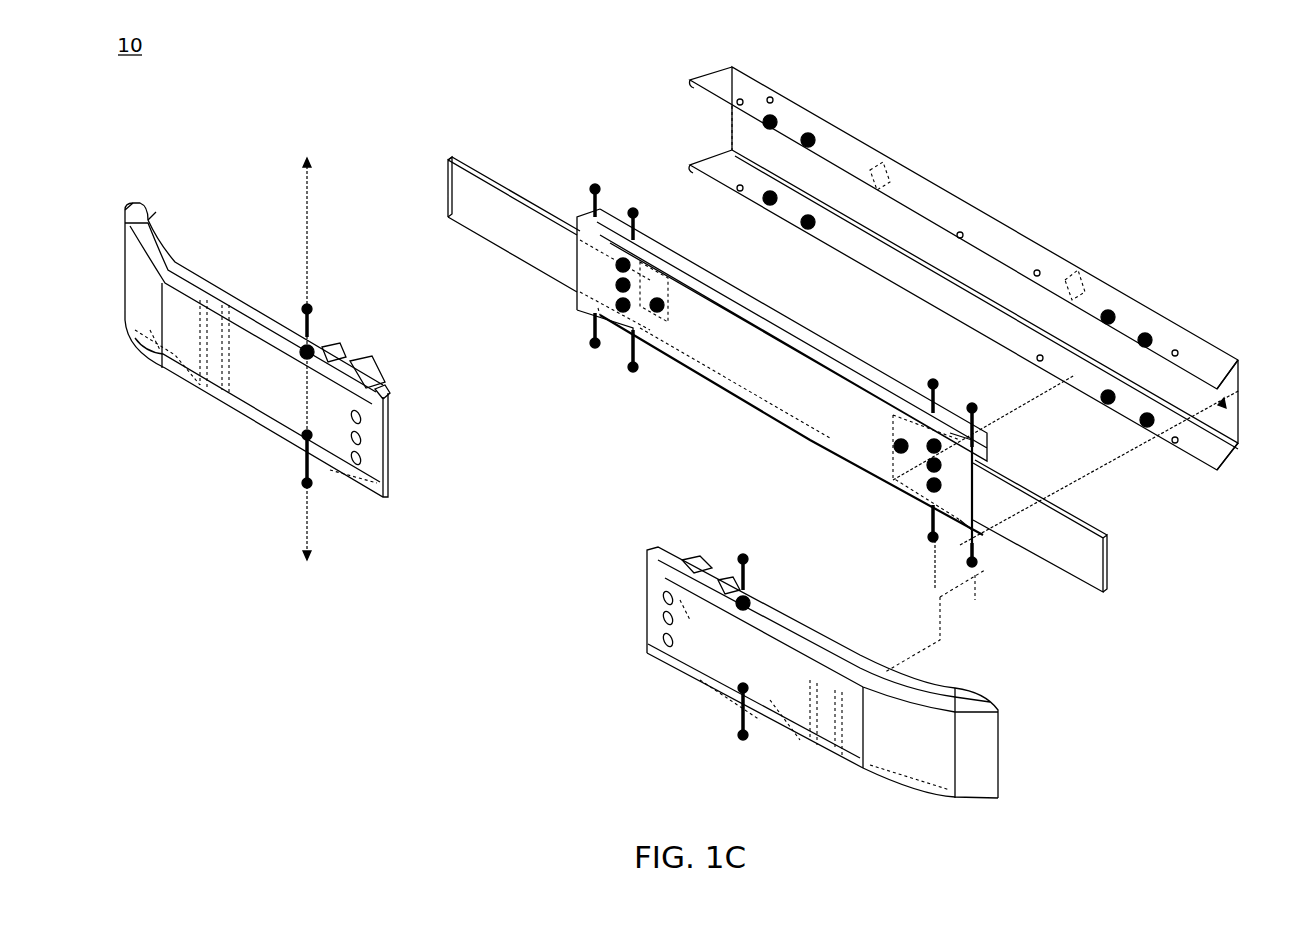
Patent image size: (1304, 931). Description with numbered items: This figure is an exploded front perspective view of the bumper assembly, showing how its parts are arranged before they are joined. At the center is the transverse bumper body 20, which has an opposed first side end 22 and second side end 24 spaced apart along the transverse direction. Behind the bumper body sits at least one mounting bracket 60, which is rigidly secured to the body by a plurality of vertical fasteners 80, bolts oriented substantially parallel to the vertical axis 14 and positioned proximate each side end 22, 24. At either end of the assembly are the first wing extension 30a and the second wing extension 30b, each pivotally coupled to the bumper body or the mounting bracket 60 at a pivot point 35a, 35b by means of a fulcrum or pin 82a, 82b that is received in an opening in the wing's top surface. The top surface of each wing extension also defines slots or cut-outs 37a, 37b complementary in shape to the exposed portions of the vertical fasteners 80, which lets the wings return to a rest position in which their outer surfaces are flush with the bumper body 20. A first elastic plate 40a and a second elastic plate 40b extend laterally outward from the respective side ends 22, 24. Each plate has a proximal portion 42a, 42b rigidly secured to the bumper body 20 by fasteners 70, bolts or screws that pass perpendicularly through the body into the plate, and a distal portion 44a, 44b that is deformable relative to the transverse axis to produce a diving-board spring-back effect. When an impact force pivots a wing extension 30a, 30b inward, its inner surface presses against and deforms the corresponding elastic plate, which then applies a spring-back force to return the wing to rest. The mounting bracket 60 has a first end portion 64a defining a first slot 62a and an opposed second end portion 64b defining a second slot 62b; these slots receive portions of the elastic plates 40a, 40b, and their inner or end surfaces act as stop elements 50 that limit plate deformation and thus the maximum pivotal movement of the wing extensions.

The vertical axis 14 is at (305, 222).
The transverse bumper body 20 is at (705, 348).
The first side end 22 is at (980, 430).
The second side end 24 is at (603, 214).
The first wing extension 30a is at (980, 752).
The second wing extension 30b is at (137, 202).
The pivot point 35a is at (752, 603).
The pivot point 35b is at (315, 351).
The slots or cut-outs 37a is at (702, 560).
The slots or cut-outs 37b is at (372, 368).
The first elastic plate 40a is at (1052, 565).
The second elastic plate 40b is at (500, 232).
The proximal portion 42a is at (980, 542).
The proximal portion 42b is at (548, 235).
The distal portion 44a is at (1108, 562).
The distal portion 44b is at (462, 165).
The stop element 50 is at (1232, 395).
The mounting bracket 60 is at (1062, 260).
The first slot 62a is at (1226, 458).
The second slot 62b is at (722, 141).
The first end portion 64a is at (1228, 345).
The second end portion 64b is at (750, 88).
The fasteners 70 is at (620, 312).
The vertical fasteners 80 is at (596, 184).
The fulcrum or pin 82a is at (749, 553).
The fulcrum or pin 82b is at (312, 312).